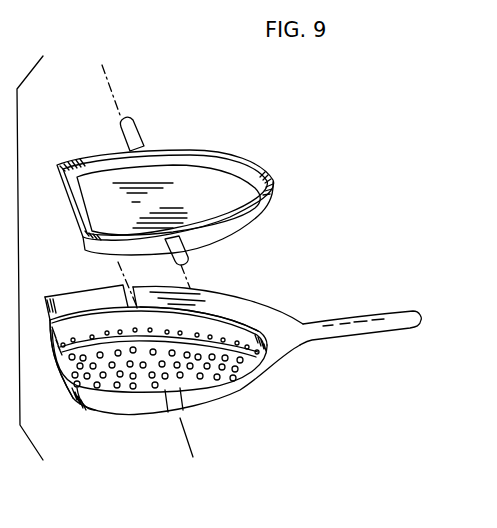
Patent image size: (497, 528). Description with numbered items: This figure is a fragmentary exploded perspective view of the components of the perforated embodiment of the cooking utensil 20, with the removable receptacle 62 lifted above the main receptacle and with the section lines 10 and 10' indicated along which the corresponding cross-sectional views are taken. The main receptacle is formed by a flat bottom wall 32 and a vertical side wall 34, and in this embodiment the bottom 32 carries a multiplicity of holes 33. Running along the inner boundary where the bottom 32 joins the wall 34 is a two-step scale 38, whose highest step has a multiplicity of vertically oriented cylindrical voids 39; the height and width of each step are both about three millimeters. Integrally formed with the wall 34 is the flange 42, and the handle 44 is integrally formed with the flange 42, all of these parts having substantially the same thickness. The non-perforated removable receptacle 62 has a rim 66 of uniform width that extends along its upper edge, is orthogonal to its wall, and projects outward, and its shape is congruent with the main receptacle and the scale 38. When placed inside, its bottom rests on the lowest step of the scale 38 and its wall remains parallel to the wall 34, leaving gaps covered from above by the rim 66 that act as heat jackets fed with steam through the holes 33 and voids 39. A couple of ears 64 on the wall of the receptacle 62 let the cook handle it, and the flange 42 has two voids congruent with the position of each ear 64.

The section line 10 is at (122, 176).
The section line 10' is at (130, 356).
The cooking utensil 20 is at (358, 368).
The bottom wall 32 is at (68, 378).
The holes 33 is at (200, 376).
The side wall 34 is at (187, 318).
The two-step scale 38 is at (78, 382).
The cylindrical voids 39 is at (240, 343).
The flange 42 is at (80, 307).
The handle 44 is at (370, 320).
The removable receptacle 62 is at (212, 130).
The ears 64 is at (133, 133).
The rim 66 is at (82, 157).